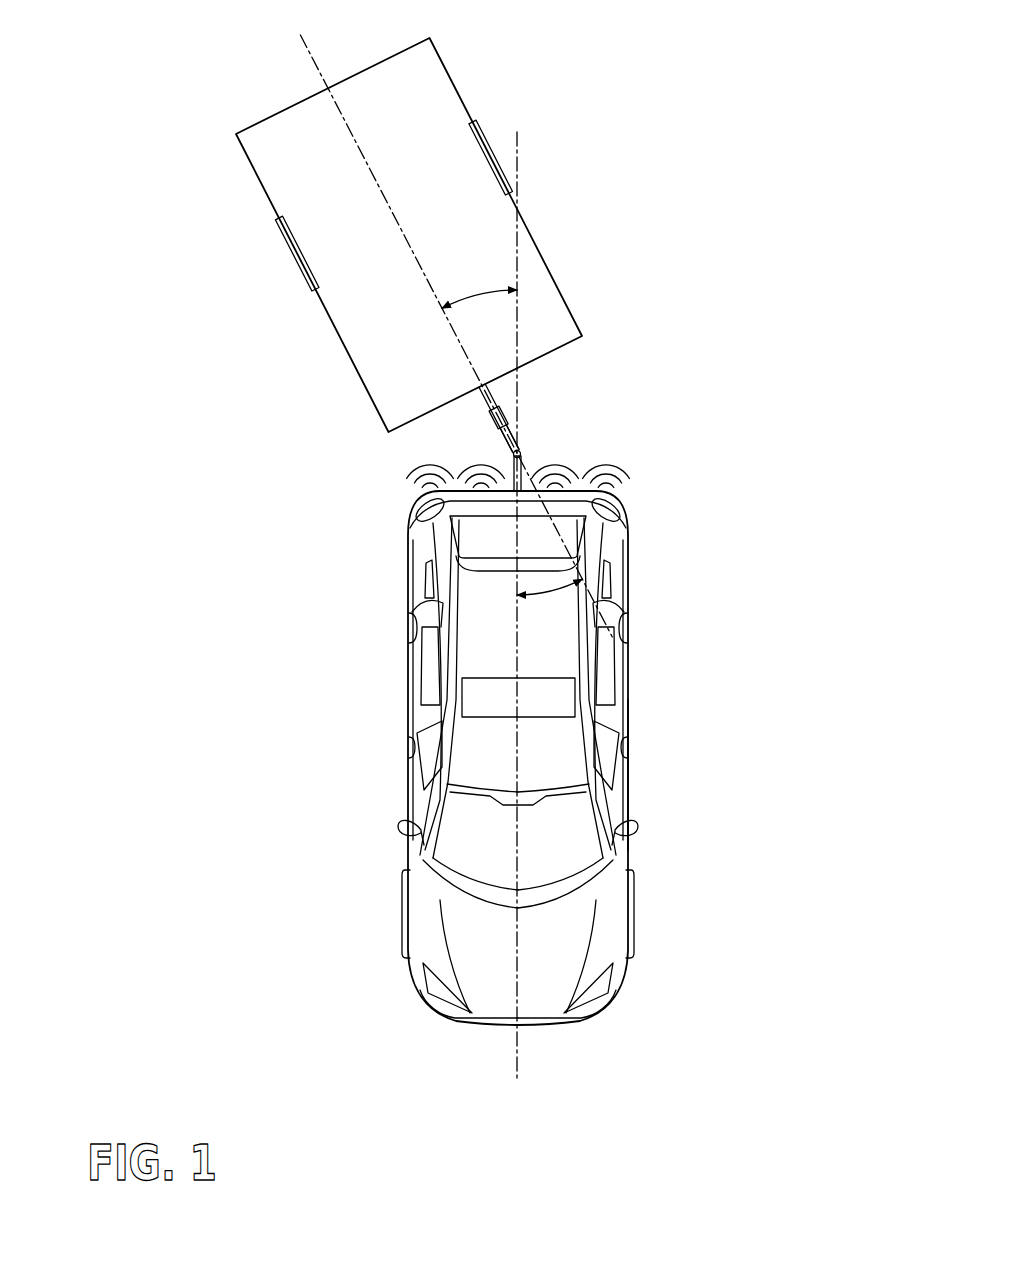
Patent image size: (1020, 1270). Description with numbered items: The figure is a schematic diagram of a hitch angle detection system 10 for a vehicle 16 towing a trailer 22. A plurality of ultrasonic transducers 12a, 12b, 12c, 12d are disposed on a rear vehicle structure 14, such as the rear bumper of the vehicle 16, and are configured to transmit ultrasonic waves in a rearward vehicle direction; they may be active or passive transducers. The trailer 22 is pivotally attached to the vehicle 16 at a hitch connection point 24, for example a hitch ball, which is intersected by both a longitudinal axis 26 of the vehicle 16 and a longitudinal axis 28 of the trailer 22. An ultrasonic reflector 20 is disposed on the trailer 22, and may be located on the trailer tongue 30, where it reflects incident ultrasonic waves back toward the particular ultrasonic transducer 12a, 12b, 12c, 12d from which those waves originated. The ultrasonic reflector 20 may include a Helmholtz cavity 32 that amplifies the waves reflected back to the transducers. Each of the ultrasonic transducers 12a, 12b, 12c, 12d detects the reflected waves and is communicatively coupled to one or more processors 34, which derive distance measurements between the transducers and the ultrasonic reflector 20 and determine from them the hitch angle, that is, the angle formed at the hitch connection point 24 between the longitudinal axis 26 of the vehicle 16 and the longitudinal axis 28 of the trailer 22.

The hitch angle detection system 10 is at (664, 118).
The ultrasonic transducer 12a is at (452, 500).
The ultrasonic transducer 12b is at (493, 504).
The ultrasonic transducer 12c is at (546, 500).
The ultrasonic transducer 12d is at (598, 502).
The rear vehicle structure 14 is at (554, 490).
The vehicle 16 is at (629, 779).
The ultrasonic reflector 20 is at (500, 416).
The trailer 22 is at (461, 168).
The hitch connection point 24 is at (522, 457).
The longitudinal axis of the vehicle 26 is at (517, 993).
The longitudinal axis of the trailer 28 is at (356, 137).
The trailer tongue 30 is at (505, 433).
The Helmholtz cavity 32 is at (491, 416).
The processor 34 is at (576, 690).